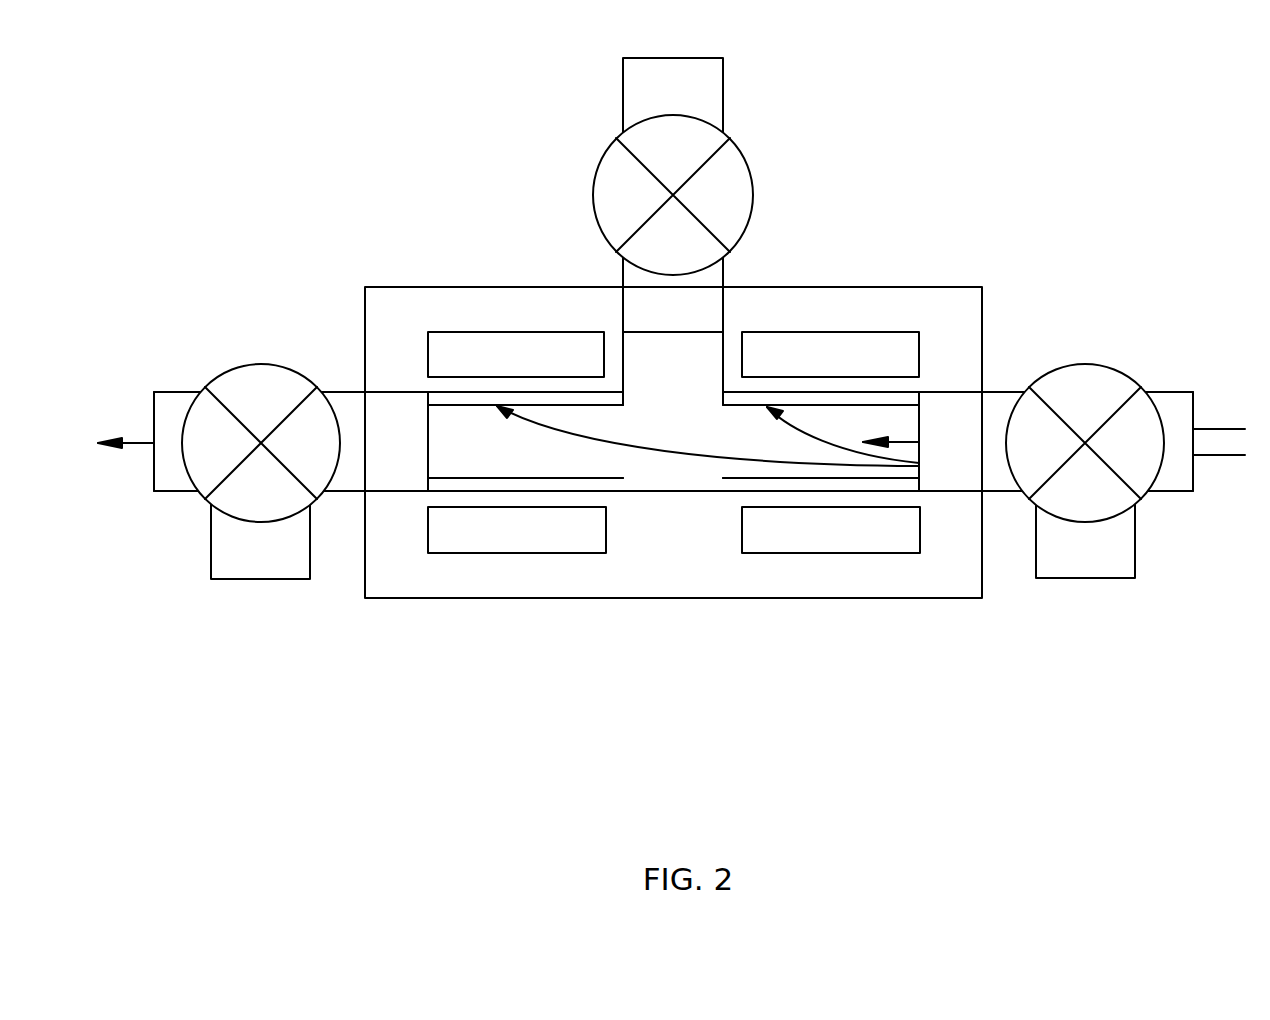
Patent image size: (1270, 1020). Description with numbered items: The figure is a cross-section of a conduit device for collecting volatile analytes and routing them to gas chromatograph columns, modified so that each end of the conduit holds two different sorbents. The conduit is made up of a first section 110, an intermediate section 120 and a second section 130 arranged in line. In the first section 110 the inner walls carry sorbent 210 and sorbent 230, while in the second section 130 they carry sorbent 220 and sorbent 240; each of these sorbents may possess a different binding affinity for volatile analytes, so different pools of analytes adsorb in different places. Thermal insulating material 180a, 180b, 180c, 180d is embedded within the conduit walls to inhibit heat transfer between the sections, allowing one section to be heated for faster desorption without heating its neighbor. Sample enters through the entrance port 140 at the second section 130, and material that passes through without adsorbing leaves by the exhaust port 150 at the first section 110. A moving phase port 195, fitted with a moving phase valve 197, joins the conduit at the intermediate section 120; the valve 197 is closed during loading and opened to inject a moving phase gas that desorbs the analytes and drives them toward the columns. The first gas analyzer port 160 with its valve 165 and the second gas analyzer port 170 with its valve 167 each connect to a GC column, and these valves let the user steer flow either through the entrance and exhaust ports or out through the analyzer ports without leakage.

The first section 110 is at (375, 605).
The intermediate section 120 is at (748, 608).
The second section 130 is at (748, 608).
The entrance port 140 is at (1003, 390).
The exhaust port 150 is at (353, 388).
The first gas analyzer port 160 is at (1135, 548).
The valve 165 is at (1110, 367).
The valve 167 is at (262, 363).
The second gas analyzer port 170 is at (310, 579).
The thermal insulating material 180a is at (516, 354).
The thermal insulating material 180b is at (830, 354).
The thermal insulating material 180c is at (517, 530).
The thermal insulating material 180d is at (831, 530).
The moving phase port 195 is at (622, 272).
The moving phase valve 197 is at (751, 163).
The sorbent 210 is at (468, 407).
The sorbent 220 is at (740, 405).
The sorbent 230 is at (543, 480).
The sorbent 240 is at (722, 483).